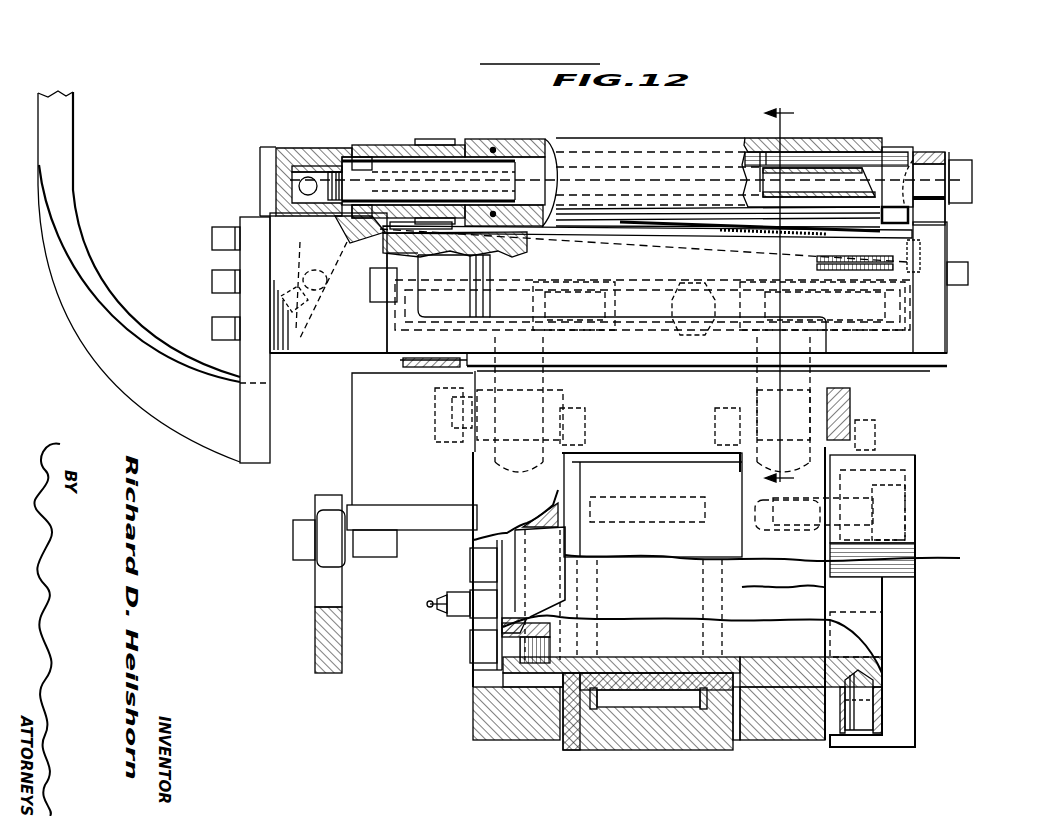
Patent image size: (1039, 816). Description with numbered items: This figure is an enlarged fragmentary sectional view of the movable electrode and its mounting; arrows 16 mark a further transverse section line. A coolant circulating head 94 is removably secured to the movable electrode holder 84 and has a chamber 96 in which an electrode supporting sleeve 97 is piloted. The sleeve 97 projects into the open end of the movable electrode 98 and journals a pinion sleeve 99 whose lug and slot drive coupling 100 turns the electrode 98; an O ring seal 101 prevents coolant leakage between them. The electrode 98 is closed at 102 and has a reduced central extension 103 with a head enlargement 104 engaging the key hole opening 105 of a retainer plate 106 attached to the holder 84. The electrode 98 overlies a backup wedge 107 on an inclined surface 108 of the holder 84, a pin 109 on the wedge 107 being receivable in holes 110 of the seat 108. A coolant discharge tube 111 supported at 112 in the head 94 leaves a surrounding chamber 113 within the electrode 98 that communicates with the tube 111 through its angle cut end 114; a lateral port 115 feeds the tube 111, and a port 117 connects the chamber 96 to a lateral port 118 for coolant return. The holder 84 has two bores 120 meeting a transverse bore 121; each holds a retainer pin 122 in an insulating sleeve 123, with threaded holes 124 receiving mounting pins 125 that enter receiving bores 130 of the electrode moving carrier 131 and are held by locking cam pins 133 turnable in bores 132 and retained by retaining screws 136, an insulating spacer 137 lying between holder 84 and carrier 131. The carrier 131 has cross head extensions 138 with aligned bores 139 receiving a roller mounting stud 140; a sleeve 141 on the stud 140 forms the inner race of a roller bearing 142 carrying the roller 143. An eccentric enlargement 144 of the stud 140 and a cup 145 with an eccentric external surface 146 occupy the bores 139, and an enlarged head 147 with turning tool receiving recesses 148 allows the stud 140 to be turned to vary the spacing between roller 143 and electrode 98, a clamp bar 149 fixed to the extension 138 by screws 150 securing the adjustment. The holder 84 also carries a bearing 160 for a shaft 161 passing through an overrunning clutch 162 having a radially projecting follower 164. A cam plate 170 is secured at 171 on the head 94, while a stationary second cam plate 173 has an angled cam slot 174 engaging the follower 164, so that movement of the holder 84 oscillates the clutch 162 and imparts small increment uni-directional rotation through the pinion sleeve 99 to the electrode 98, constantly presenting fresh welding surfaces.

The section line 16 is at (779, 294).
The movable electrode holder 84 is at (615, 238).
The electrode supporting and coolant circulating head 94 is at (278, 151).
The chamber 96 is at (362, 157).
The electrode supporting sleeve 97 is at (395, 146).
The movable electrode 98 is at (545, 142).
The pinion sleeve 99 is at (430, 140).
The lug and slot drive coupling 100 is at (625, 181).
The O ring seal 101 is at (493, 146).
The closed end 102 is at (915, 150).
The reduced central extension 103 is at (948, 158).
The head enlargement 104 is at (972, 180).
The key hole opening 105 is at (925, 212).
The retainer plate 106 is at (930, 156).
The backup wedge 107 is at (522, 238).
The inclined surface 108 is at (495, 253).
The pin 109 is at (807, 250).
The holes 110 is at (867, 254).
The coolant discharge tube 111 is at (437, 175).
The tube support 112 is at (335, 168).
The surrounding chamber 113 is at (835, 150).
The angle cut end 114 is at (870, 180).
The lateral port 115 is at (296, 165).
The port 117 is at (345, 226).
The lateral port 118 is at (310, 292).
The bores 120 is at (680, 290).
The transverse bore 121 is at (495, 352).
The retainer pin 122 is at (615, 310).
The insulating sleeve 123 is at (538, 288).
The transverse threaded holes 124 is at (812, 303).
The mounting pins 125 is at (540, 390).
The receiving bores 130 is at (570, 440).
The electrode moving carrier 131 is at (657, 378).
The locking cam pin receiving bore 132 is at (582, 410).
The locking cam pin 133 is at (452, 416).
The retaining screw 136 is at (440, 432).
The insulating spacer 137 is at (606, 372).
The cross head extensions 138 is at (473, 488).
The axially aligned bores 139 is at (478, 690).
The roller mounting stud 140 is at (676, 665).
The sleeve 141 is at (612, 665).
The roller bearing 142 is at (676, 492).
The roller 143 is at (680, 470).
The eccentric enlargement 144 is at (786, 665).
The cup 145 is at (553, 578).
The eccentric external surface 146 is at (530, 690).
The enlarged head 147 is at (868, 603).
The turning tool receiving recesses 148 is at (860, 735).
The clamp bar 149 is at (913, 573).
The screws 150 is at (905, 512).
The bearing 160 is at (437, 302).
The shaft 161 is at (430, 372).
The overrunning clutch 162 is at (352, 440).
The radially projecting follower 164 is at (317, 535).
The cam plate 170 is at (240, 370).
The cam plate fastening 171 is at (215, 248).
The second cam plate 173 is at (315, 628).
The angled cam slot 174 is at (315, 588).